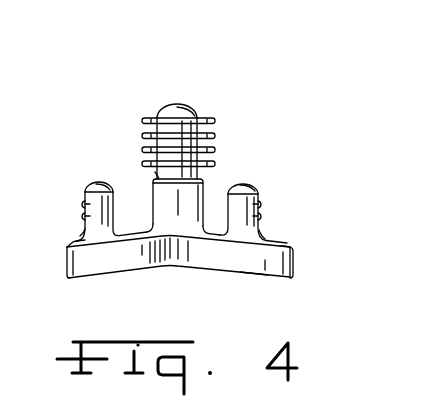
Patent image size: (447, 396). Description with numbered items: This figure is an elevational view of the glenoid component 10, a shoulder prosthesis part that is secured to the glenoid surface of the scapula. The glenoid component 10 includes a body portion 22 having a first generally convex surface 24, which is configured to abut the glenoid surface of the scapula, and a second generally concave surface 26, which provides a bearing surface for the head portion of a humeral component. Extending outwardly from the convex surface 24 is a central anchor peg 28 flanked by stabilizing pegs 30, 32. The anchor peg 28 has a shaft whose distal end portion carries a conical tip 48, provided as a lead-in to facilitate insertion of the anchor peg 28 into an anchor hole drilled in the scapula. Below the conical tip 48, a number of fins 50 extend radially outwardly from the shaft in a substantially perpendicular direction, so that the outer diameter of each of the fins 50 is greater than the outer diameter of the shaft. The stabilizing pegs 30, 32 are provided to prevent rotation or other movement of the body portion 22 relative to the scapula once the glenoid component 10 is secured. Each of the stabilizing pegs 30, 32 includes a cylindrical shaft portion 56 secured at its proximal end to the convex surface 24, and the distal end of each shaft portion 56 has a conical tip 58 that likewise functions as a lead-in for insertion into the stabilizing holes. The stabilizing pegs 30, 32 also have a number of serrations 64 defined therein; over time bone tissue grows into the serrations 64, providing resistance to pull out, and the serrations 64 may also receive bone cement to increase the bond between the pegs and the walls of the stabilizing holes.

The glenoid component 10 is at (271, 90).
The body portion 22 is at (282, 262).
The first generally convex surface 24 is at (285, 240).
The second generally concave surface 26 is at (253, 278).
The anchor peg 28 is at (211, 103).
The stabilizing peg 30 is at (214, 196).
The stabilizing peg 32 is at (64, 171).
The conical tip 48 is at (177, 103).
The fins 50 is at (216, 164).
The cylindrical shaft portion 56 is at (158, 175).
The conical tip 58 is at (97, 181).
The serrations 64 is at (82, 216).